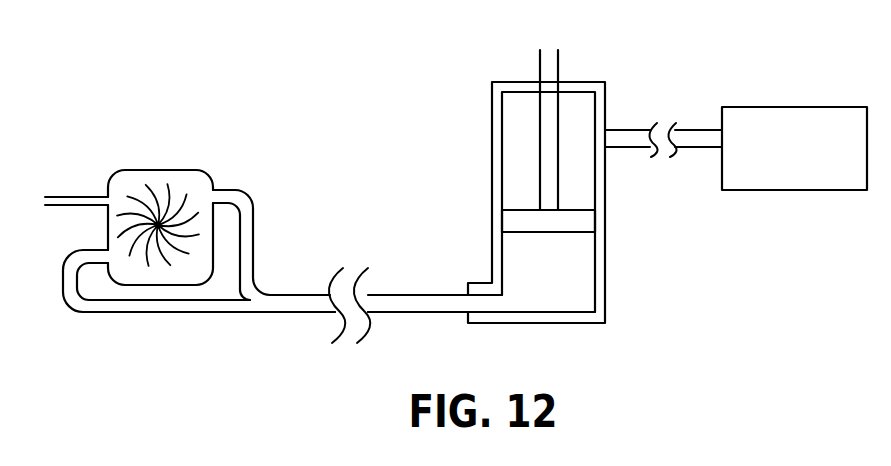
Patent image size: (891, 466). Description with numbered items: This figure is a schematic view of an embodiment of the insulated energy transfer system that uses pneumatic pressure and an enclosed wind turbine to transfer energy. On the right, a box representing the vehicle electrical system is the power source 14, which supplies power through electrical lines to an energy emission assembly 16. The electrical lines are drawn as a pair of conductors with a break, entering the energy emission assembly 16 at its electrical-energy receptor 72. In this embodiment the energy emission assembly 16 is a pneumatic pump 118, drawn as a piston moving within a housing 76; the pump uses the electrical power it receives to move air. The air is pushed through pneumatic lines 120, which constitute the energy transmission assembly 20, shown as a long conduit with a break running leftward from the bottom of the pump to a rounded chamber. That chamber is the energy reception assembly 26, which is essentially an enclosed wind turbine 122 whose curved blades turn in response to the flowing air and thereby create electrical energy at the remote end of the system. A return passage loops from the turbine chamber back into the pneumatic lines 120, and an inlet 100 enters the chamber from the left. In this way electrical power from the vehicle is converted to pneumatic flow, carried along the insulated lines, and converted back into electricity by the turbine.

The power source 14 is at (805, 107).
The energy emission assembly 16 is at (646, 280).
The energy transmission assembly 20 is at (277, 326).
The energy reception assembly 26 is at (155, 155).
The electrical-energy receptor 72 is at (613, 127).
The housing 76 is at (533, 323).
The inlet 100 is at (73, 197).
The pneumatic pump 118 is at (598, 82).
The pneumatic lines 120 is at (300, 292).
The enclosed wind turbine 122 is at (190, 170).